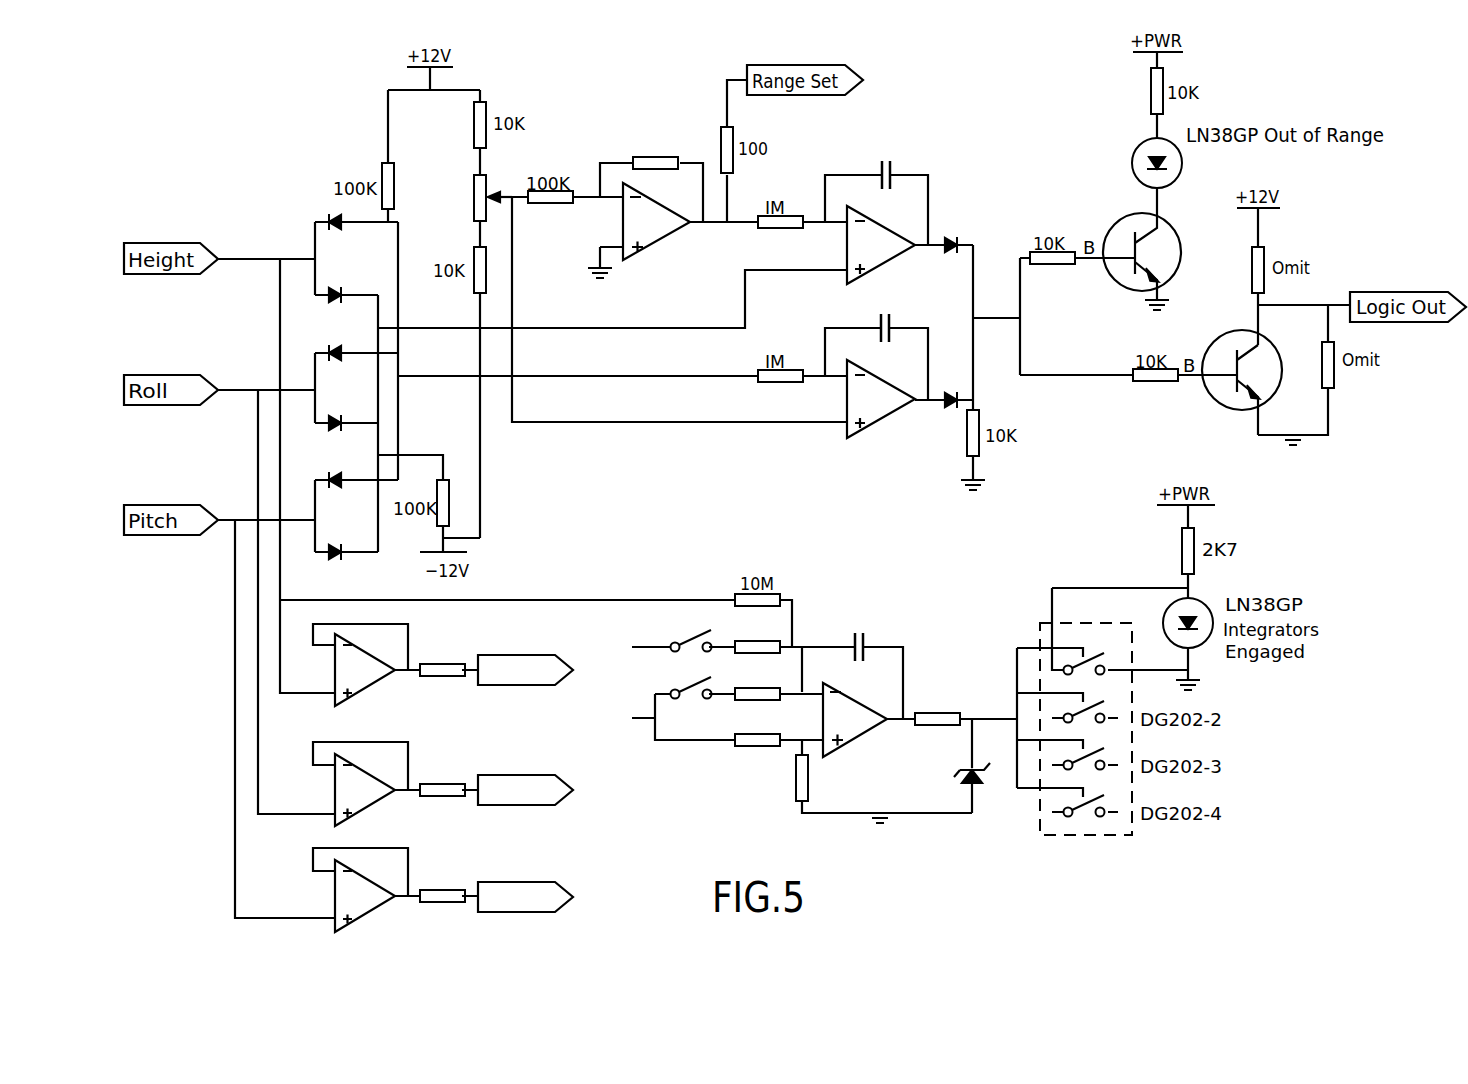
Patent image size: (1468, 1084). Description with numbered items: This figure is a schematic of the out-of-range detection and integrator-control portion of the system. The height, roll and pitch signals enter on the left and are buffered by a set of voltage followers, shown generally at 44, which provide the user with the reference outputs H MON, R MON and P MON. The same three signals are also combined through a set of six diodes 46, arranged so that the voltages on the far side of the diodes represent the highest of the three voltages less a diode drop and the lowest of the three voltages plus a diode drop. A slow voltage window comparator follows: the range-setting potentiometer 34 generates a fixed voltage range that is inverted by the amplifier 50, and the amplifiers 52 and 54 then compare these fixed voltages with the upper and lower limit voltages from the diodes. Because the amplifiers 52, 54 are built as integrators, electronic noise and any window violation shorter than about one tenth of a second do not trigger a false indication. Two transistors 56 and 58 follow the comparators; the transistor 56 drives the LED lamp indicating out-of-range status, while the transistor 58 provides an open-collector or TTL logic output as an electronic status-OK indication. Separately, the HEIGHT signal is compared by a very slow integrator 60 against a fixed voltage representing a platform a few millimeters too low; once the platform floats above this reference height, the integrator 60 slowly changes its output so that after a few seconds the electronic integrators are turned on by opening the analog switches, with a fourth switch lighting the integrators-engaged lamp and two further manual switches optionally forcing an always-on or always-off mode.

The potentiometer 34 is at (473, 194).
The monitor output buffer amplifiers 44 is at (176, 720).
The set of six diodes 46 is at (278, 236).
The amplifier 50 is at (652, 232).
The amplifier 52 is at (883, 253).
The amplifier 54 is at (881, 408).
The transistor 56 is at (1126, 222).
The transistor 58 is at (1240, 336).
The integrator 60 is at (889, 601).